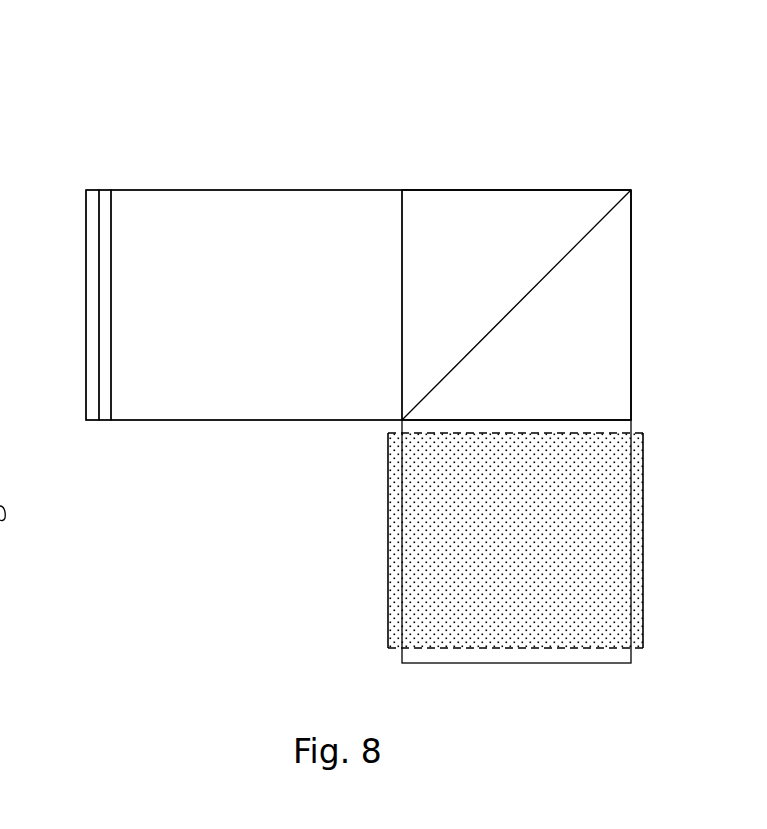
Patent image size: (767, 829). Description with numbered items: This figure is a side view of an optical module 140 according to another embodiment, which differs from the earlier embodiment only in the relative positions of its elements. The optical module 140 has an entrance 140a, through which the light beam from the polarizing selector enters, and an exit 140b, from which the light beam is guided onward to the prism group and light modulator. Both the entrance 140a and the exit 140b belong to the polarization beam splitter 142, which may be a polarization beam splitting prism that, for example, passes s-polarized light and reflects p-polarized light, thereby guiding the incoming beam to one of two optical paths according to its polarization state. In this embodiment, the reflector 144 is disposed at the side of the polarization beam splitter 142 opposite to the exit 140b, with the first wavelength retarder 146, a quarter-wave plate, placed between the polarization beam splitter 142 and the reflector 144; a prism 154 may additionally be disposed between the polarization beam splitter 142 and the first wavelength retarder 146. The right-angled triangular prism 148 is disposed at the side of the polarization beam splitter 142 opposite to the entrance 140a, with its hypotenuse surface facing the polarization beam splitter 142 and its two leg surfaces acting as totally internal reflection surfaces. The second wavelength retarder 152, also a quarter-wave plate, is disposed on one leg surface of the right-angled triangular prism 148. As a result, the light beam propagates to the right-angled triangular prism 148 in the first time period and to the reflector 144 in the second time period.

The optical module 140 is at (90, 72).
The entrance 140a is at (586, 176).
The exit 140b is at (644, 273).
The polarization beam splitter 142 is at (467, 197).
The reflector 144 is at (93, 192).
The first wavelength retarder 146 is at (110, 192).
The right-angled triangular prism 148 is at (543, 655).
The second wavelength retarder 152 is at (635, 532).
The prism 154 is at (251, 198).